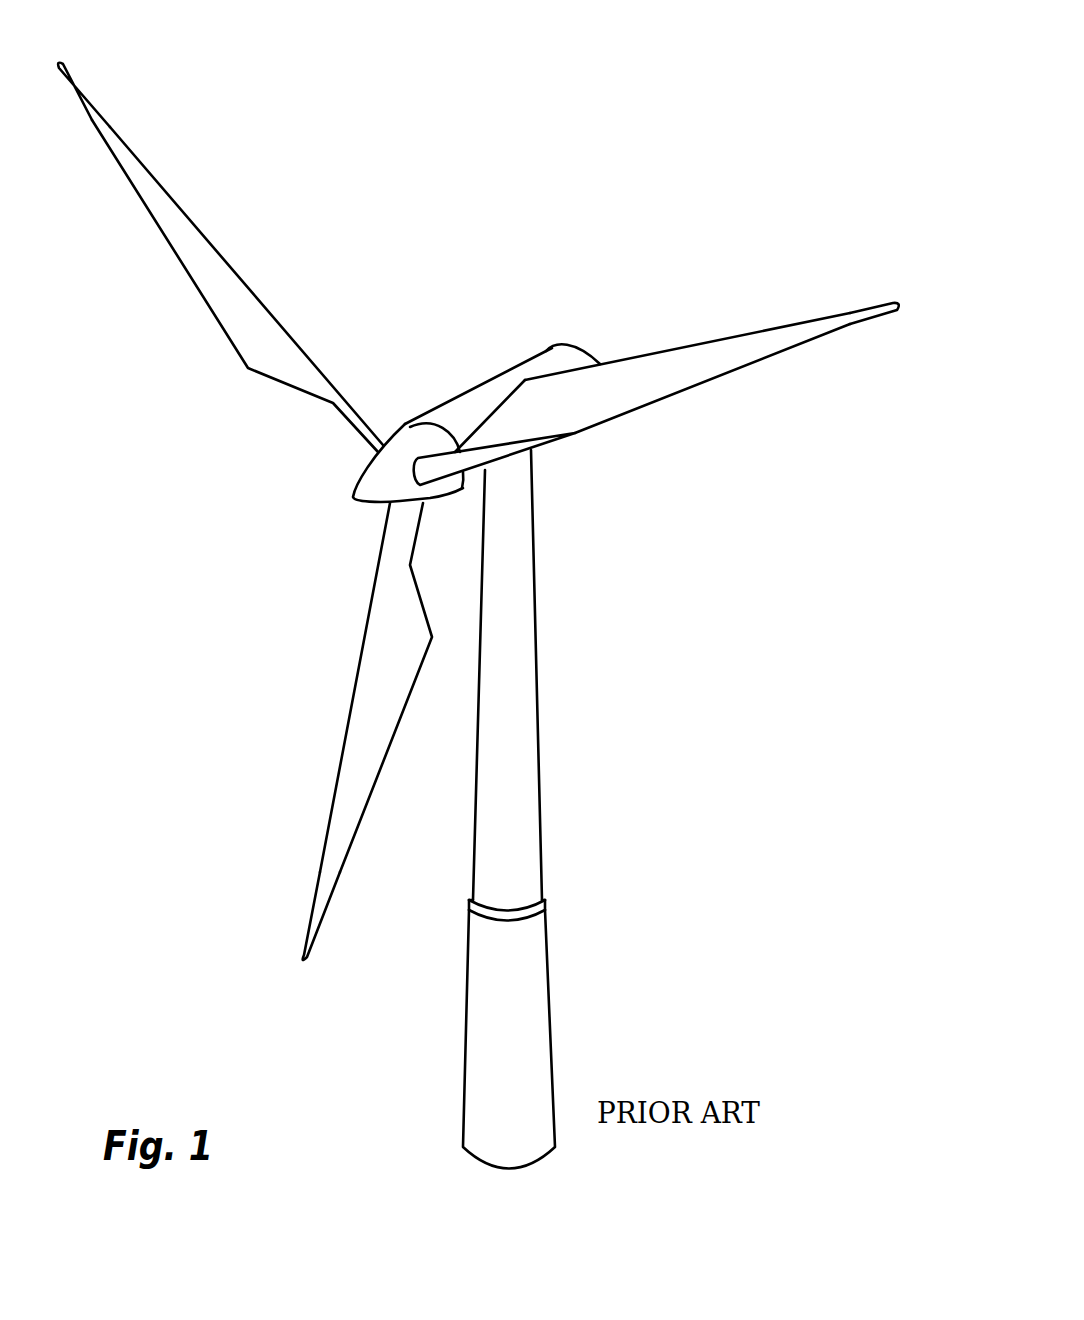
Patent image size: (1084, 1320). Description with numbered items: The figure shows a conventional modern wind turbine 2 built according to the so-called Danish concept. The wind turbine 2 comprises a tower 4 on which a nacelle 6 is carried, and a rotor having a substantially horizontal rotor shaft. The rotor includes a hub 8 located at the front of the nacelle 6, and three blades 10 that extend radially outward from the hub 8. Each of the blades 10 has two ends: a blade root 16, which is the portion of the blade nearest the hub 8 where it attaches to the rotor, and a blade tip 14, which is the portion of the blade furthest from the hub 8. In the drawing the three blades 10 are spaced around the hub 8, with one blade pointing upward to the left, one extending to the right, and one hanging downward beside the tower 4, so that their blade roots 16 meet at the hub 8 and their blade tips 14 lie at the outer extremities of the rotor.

The wind turbine 2 is at (648, 752).
The tower 4 is at (526, 680).
The nacelle 6 is at (470, 402).
The hub 8 is at (375, 480).
The blades 10 is at (260, 342).
The blade tip 14 is at (110, 115).
The blade root 16 is at (383, 440).